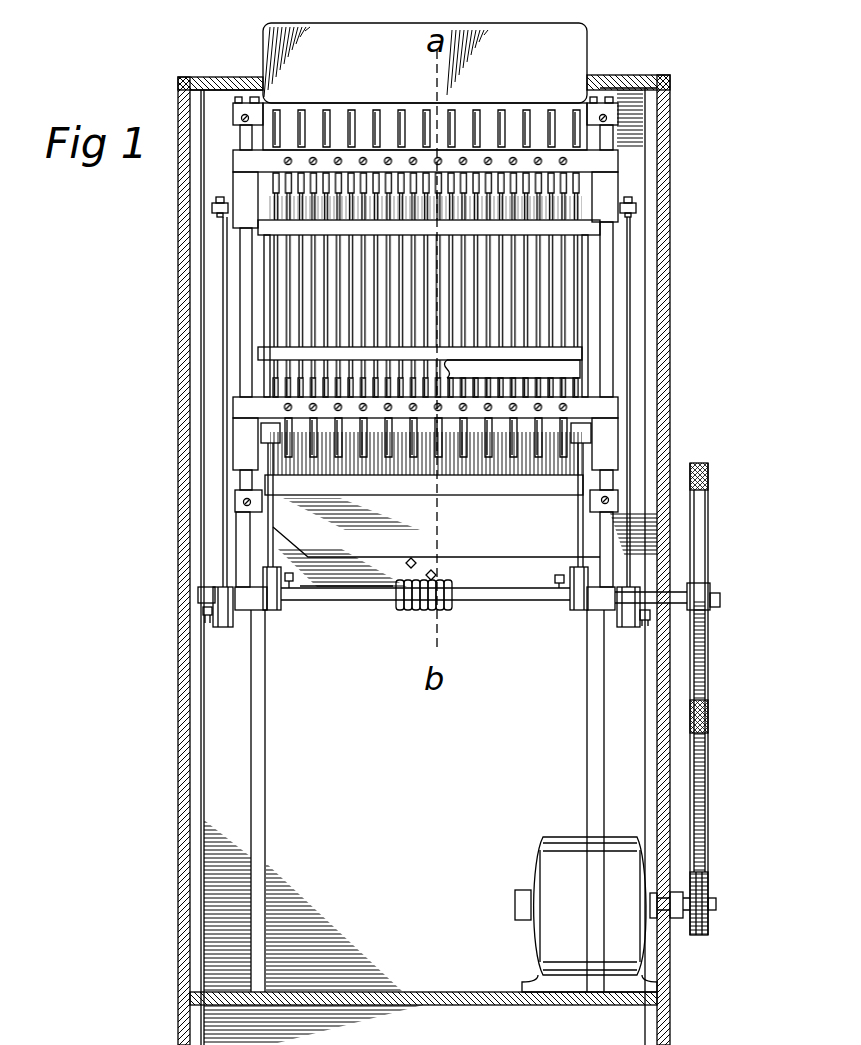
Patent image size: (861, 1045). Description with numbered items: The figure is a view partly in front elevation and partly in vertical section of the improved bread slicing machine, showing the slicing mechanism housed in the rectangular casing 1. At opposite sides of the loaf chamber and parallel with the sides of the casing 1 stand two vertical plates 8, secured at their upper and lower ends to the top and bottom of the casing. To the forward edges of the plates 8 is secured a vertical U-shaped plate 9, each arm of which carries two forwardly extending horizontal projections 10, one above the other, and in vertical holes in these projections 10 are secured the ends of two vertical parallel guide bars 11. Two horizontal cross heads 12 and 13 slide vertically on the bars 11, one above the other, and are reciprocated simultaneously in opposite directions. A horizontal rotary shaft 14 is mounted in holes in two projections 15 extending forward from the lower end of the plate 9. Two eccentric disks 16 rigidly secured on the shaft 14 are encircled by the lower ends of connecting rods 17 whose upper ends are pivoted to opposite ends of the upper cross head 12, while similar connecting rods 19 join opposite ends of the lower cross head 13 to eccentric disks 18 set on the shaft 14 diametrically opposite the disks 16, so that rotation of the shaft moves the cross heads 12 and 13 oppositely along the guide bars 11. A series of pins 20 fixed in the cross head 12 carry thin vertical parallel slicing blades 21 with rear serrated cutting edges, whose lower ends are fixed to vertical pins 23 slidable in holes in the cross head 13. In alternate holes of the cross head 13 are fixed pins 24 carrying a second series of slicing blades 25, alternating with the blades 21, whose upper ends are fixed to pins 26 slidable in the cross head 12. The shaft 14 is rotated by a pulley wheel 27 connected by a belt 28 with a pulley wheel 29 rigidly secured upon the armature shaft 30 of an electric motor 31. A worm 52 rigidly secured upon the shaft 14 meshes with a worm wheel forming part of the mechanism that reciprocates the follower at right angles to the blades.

The rectangular casing 1 is at (178, 811).
The vertical plates 8 is at (262, 757).
The vertical U-shaped plate 9 is at (353, 562).
The horizontal projections 10 is at (235, 118).
The vertical parallel guide bars 11 is at (243, 138).
The cross head 12 is at (245, 163).
The cross head 13 is at (245, 407).
The horizontal rotary shaft 14 is at (336, 600).
The projections 15 is at (250, 605).
The eccentric disks 16 is at (200, 617).
The connecting rods 17 is at (225, 565).
The eccentric disks 18 is at (283, 571).
The connecting rods 19 is at (273, 515).
The pins 20 is at (212, 206).
The slicing blades 21 is at (292, 203).
The vertical pins 23 is at (313, 447).
The pins 24 is at (273, 384).
The slicing blades 25 is at (302, 318).
The pins 26 is at (330, 112).
The pulley wheel 27 is at (709, 678).
The belt 28 is at (709, 762).
The pulley wheel 29 is at (708, 879).
The armature shaft 30 is at (716, 903).
The electric motor 31 is at (552, 868).
The worm 52 is at (418, 612).